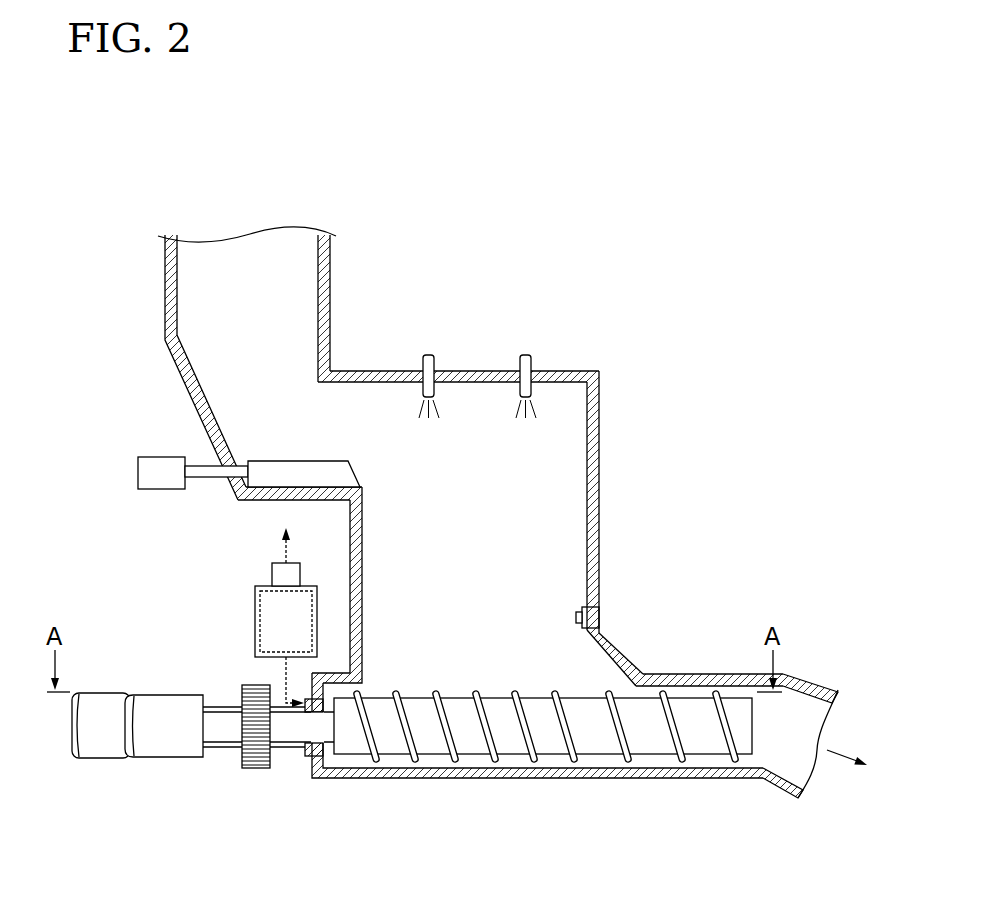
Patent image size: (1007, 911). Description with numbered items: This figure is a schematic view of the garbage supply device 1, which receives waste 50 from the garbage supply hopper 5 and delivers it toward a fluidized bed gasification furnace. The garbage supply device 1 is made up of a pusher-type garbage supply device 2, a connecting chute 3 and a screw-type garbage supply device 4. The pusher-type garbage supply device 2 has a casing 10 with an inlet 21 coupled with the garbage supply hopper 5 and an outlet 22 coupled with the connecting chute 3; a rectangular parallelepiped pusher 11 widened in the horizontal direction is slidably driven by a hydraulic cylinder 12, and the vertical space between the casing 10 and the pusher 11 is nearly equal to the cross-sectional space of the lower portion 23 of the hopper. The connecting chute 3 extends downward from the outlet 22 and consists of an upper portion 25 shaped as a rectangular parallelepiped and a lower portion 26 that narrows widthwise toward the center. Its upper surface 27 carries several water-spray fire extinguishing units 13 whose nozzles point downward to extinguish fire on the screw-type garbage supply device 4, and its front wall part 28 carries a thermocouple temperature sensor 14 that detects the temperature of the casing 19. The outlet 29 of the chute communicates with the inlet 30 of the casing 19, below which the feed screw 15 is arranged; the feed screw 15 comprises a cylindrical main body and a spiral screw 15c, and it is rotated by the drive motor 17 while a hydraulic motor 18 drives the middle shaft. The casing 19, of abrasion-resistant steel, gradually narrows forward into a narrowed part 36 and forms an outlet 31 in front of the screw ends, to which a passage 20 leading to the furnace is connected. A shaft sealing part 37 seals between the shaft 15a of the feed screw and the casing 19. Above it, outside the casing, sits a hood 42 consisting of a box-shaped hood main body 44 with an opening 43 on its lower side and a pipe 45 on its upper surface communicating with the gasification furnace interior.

The garbage supply device 1 is at (655, 303).
The pusher-type garbage supply device 2 is at (240, 516).
The connecting chute 3 is at (611, 520).
The screw-type garbage supply device 4 is at (499, 800).
The garbage supply hopper 5 is at (330, 262).
The casing 10 is at (203, 428).
The pusher 11 is at (313, 477).
The hydraulic cylinder 12 is at (162, 478).
The fire extinguishing unit 13 is at (428, 353).
The temperature sensor 14 is at (588, 616).
The feed screw 15 is at (543, 773).
The shaft 15a is at (222, 728).
The screw 15c is at (412, 757).
The drive motor 17 is at (171, 745).
The hydraulic motor 18 is at (98, 708).
The casing 19 is at (560, 778).
The passage 20 is at (806, 686).
The inlet 21 is at (183, 383).
The outlet 22 is at (361, 378).
The lower portion 23 is at (233, 362).
The upper portion 25 is at (550, 448).
The lower portion 26 is at (555, 567).
The upper surface 27 is at (563, 372).
The front wall part 28 is at (599, 478).
The outlet 29 is at (351, 600).
The inlet 30 is at (600, 628).
The outlet 31 is at (745, 782).
The narrowed part 36 is at (645, 675).
The shaft sealing part 37 is at (300, 748).
The hood 42 is at (243, 617).
The opening 43 is at (297, 663).
The hood main body 44 is at (275, 639).
The pipe 45 is at (272, 573).
The waste 50 is at (247, 212).